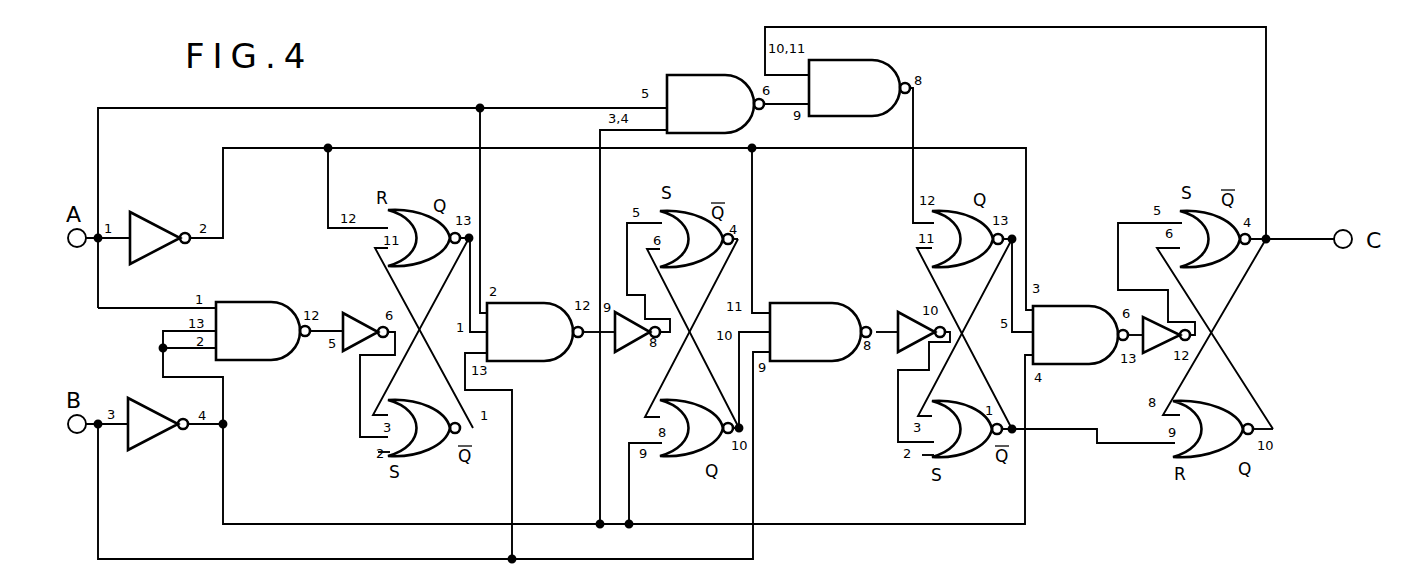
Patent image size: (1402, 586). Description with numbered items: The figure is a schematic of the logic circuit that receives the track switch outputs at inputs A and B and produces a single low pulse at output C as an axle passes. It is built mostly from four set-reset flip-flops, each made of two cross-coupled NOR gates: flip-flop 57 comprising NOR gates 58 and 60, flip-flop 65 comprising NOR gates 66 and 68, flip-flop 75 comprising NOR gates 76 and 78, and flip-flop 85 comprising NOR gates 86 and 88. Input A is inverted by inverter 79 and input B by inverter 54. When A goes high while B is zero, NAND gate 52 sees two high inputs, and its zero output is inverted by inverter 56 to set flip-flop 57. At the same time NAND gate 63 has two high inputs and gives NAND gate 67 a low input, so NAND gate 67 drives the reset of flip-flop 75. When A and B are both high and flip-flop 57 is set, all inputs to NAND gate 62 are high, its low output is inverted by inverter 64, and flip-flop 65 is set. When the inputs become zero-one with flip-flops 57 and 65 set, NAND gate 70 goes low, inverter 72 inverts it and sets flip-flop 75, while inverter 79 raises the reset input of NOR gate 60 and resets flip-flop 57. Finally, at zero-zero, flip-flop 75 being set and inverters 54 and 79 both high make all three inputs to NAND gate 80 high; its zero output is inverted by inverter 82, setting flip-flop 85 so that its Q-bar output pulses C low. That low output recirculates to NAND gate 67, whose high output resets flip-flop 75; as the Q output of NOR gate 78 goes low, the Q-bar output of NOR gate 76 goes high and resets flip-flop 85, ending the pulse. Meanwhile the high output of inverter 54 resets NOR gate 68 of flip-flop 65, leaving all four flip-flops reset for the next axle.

The inverter 79 is at (162, 213).
The inverter 54 is at (153, 442).
The NAND gate 52 is at (233, 302).
The inverter 56 is at (363, 313).
The NOR gate 60 is at (404, 210).
The NOR gate 58 is at (428, 458).
The flip-flop 57 is at (434, 294).
The NAND gate 62 is at (540, 303).
The inverter 64 is at (632, 352).
The NAND gate 63 is at (690, 75).
The NAND gate 67 is at (888, 63).
The NOR gate 66 is at (686, 211).
The NOR gate 68 is at (696, 452).
The flip-flop 65 is at (699, 294).
The NAND gate 70 is at (800, 303).
The inverter 72 is at (910, 312).
The NOR gate 78 is at (952, 211).
The NOR gate 76 is at (962, 457).
The flip-flop 75 is at (981, 294).
The NAND gate 80 is at (1065, 306).
The inverter 82 is at (1158, 357).
The NOR gate 86 is at (1208, 211).
The NOR gate 88 is at (1210, 457).
The flip-flop 85 is at (1222, 296).